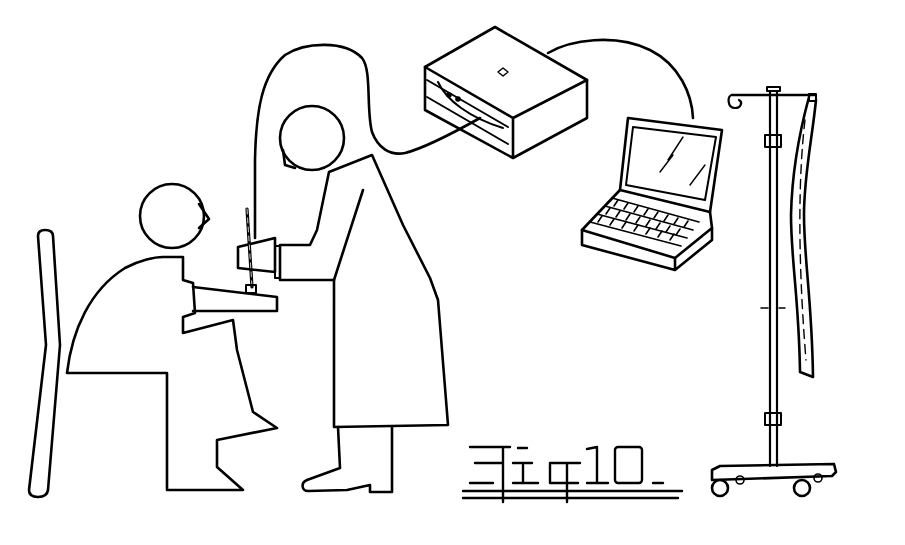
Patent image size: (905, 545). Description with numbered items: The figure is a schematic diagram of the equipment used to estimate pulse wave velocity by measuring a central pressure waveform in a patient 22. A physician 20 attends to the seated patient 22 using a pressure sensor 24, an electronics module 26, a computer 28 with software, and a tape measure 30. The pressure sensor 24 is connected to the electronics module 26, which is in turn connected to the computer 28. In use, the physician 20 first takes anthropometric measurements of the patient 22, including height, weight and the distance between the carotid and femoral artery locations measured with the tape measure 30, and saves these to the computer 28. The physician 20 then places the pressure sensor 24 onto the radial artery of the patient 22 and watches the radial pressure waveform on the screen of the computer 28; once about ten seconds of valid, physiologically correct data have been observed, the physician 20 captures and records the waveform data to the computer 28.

The physician 20 is at (429, 276).
The patient 22 is at (115, 277).
The pressure sensor 24 is at (258, 233).
The electronics module 26 is at (447, 56).
The computer 28 is at (582, 228).
The tape measure 30 is at (798, 195).